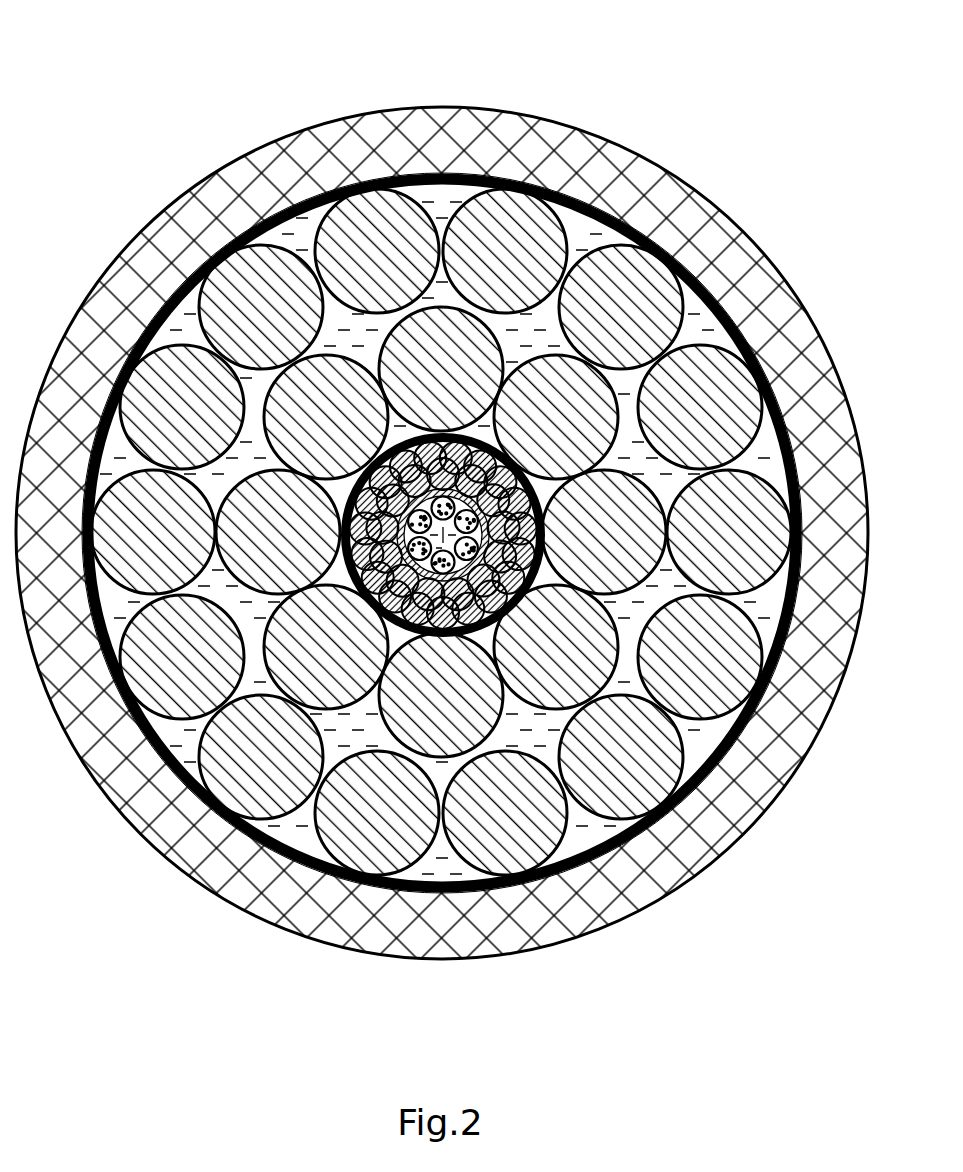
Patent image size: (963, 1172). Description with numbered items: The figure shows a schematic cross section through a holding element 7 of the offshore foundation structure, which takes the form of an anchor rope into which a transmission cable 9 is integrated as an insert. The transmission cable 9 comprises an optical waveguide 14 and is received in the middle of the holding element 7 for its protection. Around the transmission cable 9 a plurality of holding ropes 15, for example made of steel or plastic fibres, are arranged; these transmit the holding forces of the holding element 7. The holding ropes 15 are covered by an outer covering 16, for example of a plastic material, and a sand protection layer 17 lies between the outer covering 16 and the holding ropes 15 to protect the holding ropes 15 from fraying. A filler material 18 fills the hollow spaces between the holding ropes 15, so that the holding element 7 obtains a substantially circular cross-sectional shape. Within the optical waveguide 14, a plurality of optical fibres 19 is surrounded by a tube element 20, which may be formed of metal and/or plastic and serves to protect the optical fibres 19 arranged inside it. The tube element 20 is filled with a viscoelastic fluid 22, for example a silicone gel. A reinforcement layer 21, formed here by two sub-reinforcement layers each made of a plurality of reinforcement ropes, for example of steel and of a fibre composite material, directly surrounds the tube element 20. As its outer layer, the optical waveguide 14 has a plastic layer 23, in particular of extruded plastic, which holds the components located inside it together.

The holding element 7 is at (112, 78).
The transmission cable 9 is at (385, 640).
The optical waveguide 14 is at (408, 415).
The holding ropes 15 is at (247, 780).
The outer covering 16 is at (667, 870).
The sand protection layer 17 is at (108, 795).
The filler material 18 is at (437, 872).
The optical fibres 19 is at (600, 352).
The tube element 20 is at (492, 636).
The reinforcement layer 21 is at (782, 778).
The viscoelastic fluid 22 is at (422, 478).
The plastic layer 23 is at (550, 528).